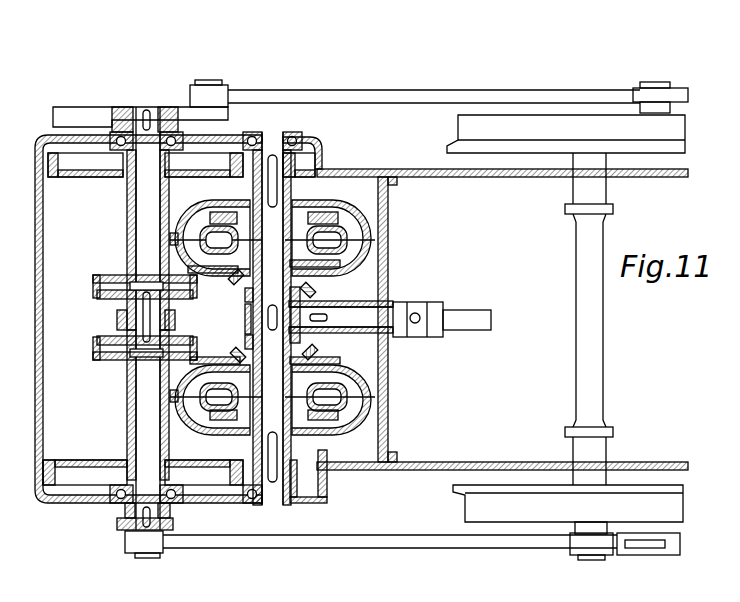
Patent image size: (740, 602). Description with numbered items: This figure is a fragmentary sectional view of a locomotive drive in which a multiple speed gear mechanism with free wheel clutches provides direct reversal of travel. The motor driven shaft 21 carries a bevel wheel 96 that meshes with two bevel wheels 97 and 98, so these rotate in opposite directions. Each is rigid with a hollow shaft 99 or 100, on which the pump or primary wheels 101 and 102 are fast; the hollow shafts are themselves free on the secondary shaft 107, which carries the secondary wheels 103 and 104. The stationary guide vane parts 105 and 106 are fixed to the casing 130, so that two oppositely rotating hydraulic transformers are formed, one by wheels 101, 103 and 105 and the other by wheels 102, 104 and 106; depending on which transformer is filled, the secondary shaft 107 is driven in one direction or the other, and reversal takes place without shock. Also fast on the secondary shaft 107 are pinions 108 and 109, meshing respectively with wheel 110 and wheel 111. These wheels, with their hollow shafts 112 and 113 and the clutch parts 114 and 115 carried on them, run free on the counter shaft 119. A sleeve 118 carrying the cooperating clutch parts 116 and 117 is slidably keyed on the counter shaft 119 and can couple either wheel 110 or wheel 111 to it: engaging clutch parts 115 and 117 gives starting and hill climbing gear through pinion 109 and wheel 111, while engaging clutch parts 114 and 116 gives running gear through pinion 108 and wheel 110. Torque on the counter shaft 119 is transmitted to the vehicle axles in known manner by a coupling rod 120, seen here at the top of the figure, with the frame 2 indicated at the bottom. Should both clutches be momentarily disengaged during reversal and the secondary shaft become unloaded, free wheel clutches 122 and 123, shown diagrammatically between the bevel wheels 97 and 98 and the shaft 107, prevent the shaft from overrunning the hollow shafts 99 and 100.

The frame 2 is at (497, 540).
The motor driven shaft 21 is at (386, 333).
The bevel wheel 96 is at (320, 304).
The bevel wheel 97 is at (309, 275).
The bevel wheel 98 is at (316, 350).
The hollow shaft 99 is at (247, 297).
The hollow shaft 100 is at (240, 367).
The pump or primary wheel 101 is at (240, 214).
The pump or primary wheel 102 is at (320, 430).
The secondary wheel 103 is at (188, 218).
The secondary wheel 104 is at (348, 403).
The stationary guide vane part 105 is at (233, 262).
The stationary guide vane part 106 is at (320, 380).
The secondary shaft 107 is at (273, 152).
The pinion 108 is at (305, 158).
The pinion 109 is at (295, 475).
The wheel 110 is at (145, 165).
The wheel 111 is at (205, 463).
The hollow shaft 112 is at (158, 203).
The hollow shaft 113 is at (129, 439).
The clutch part 114 is at (98, 268).
The clutch part 115 is at (95, 360).
The cooperating clutch part 116 is at (97, 295).
The cooperating clutch part 117 is at (106, 334).
The sleeve 118 is at (117, 309).
The counter shaft 119 is at (147, 192).
The coupling rod 120 is at (397, 100).
The free wheel clutch 122 is at (247, 314).
The free wheel clutch 123 is at (247, 340).
The casing 130 is at (388, 414).